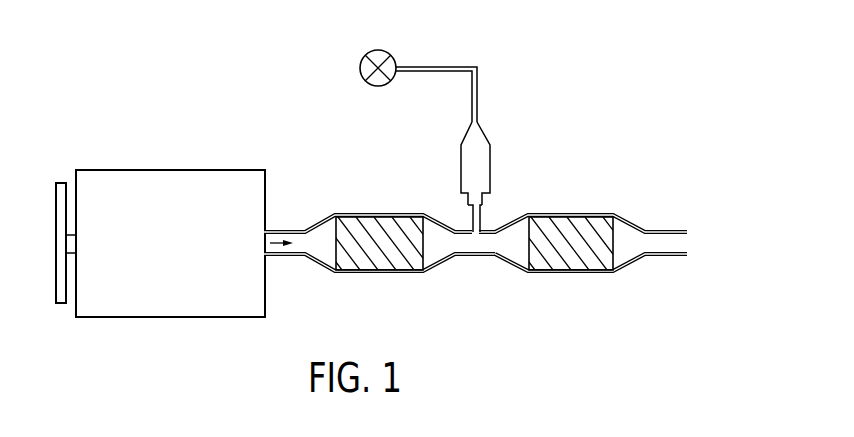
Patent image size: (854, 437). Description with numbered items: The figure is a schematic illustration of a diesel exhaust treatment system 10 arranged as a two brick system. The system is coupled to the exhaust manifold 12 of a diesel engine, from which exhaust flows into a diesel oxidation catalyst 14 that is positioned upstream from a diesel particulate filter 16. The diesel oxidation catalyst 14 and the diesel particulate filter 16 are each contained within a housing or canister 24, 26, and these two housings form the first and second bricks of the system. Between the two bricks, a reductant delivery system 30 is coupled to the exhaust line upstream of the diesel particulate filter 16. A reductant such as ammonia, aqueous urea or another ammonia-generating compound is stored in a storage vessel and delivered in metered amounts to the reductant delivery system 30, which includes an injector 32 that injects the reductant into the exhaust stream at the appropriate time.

The diesel exhaust treatment system 10 is at (489, 173).
The exhaust manifold 12 is at (147, 170).
The diesel oxidation catalyst 14 is at (375, 266).
The diesel particulate filter 16 is at (570, 267).
The housing or canister 24 is at (326, 218).
The housing or canister 26 is at (622, 213).
The reductant delivery system 30 is at (469, 130).
The injector 32 is at (482, 215).